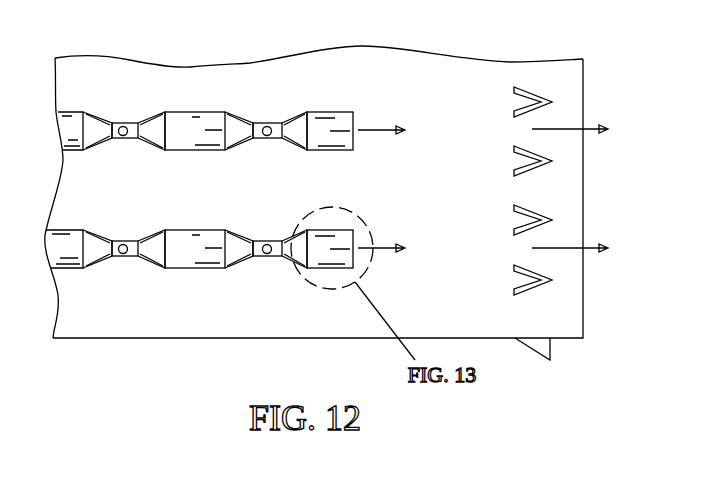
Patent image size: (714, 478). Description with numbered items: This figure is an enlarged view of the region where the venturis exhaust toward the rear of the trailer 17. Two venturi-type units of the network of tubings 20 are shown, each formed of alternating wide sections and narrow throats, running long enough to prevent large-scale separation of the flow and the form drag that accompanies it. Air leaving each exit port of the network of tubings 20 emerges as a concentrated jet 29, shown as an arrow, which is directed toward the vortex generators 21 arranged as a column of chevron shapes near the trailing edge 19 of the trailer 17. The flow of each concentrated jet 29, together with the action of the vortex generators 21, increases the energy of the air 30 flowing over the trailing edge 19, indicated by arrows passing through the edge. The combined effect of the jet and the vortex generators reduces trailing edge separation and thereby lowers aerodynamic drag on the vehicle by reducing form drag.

The trailer 17 is at (575, 72).
The trailing edge 19 is at (563, 330).
The network of tubings 20 is at (192, 240).
The vortex generators 21 is at (524, 88).
The concentrated jet 29 is at (373, 130).
The air 30 is at (590, 132).